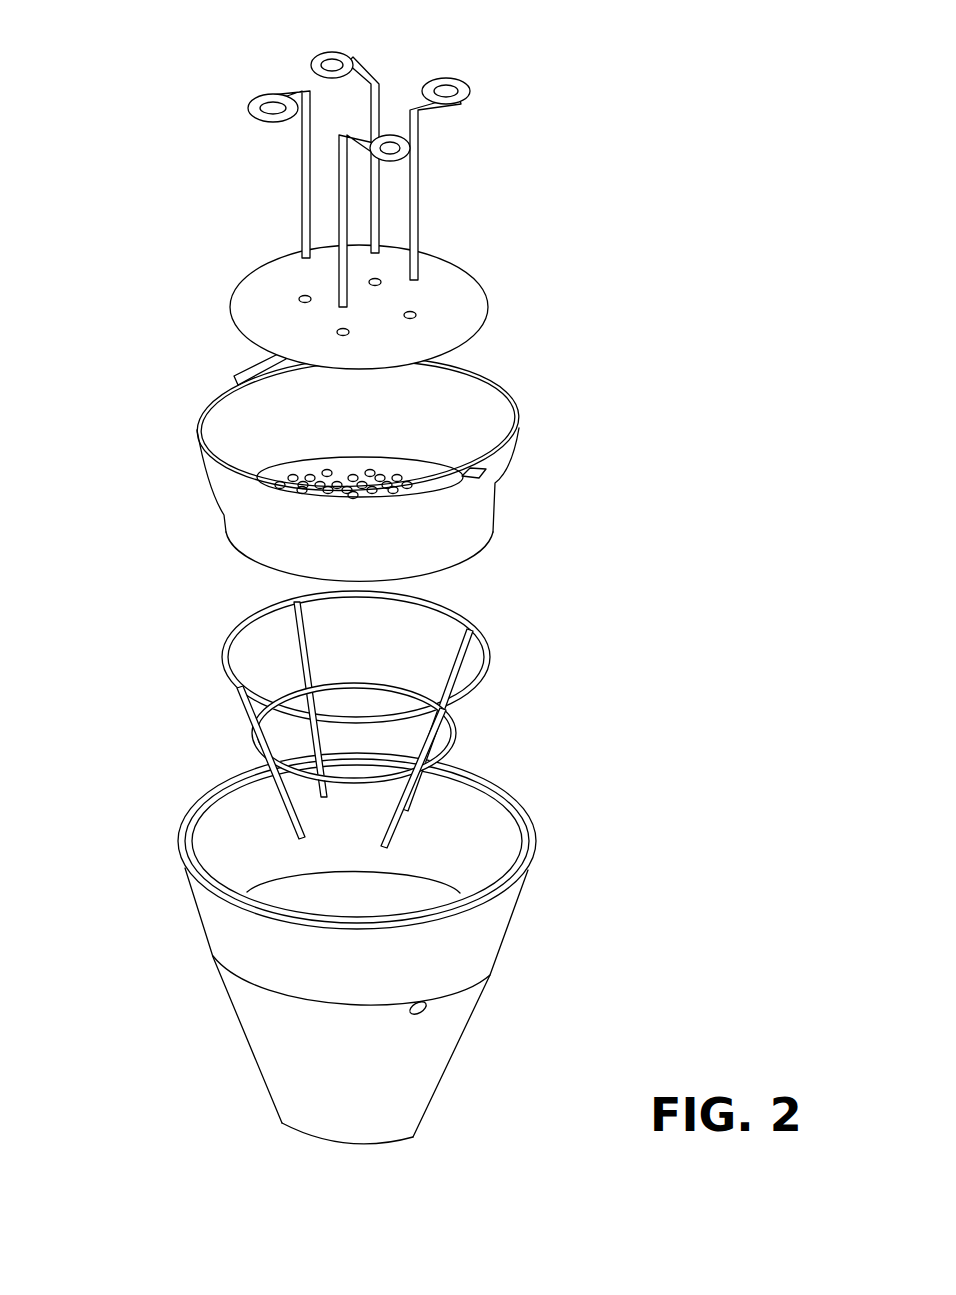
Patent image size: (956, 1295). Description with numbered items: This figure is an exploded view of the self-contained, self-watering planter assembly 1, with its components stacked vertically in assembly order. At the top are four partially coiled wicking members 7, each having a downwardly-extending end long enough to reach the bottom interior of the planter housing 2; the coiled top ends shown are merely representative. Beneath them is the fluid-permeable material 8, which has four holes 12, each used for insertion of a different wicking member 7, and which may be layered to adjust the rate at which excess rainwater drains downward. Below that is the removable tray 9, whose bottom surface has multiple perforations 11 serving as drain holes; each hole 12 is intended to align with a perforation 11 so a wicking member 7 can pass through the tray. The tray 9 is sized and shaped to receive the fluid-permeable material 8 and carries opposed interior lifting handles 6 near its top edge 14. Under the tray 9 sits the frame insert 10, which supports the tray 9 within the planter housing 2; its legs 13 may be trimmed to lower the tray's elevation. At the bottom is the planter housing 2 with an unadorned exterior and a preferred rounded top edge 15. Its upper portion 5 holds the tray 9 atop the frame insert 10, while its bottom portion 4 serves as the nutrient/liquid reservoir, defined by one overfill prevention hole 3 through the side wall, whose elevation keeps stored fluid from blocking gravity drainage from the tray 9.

The planter assembly 1 is at (135, 90).
The planter housing 2 is at (160, 787).
The overfill prevention hole 3 is at (428, 1008).
The bottom portion 4 is at (423, 1088).
The upper portion 5 is at (493, 917).
The interior handle 6 is at (247, 362).
The wicking member 7 is at (347, 55).
The fluid-permeable material 8 is at (448, 272).
The removable tray 9 is at (478, 503).
The frame insert 10 is at (478, 625).
The perforations 11 is at (357, 478).
The hole 12 is at (420, 316).
The leg 13 is at (296, 813).
The top edge of tray 14 is at (190, 413).
The top edge of planter housing 15 is at (523, 860).